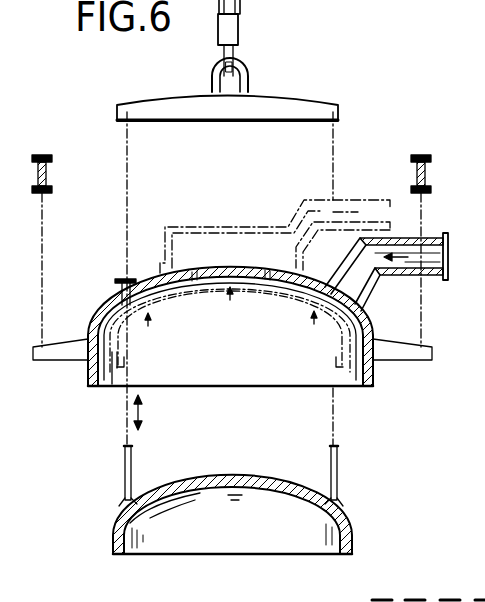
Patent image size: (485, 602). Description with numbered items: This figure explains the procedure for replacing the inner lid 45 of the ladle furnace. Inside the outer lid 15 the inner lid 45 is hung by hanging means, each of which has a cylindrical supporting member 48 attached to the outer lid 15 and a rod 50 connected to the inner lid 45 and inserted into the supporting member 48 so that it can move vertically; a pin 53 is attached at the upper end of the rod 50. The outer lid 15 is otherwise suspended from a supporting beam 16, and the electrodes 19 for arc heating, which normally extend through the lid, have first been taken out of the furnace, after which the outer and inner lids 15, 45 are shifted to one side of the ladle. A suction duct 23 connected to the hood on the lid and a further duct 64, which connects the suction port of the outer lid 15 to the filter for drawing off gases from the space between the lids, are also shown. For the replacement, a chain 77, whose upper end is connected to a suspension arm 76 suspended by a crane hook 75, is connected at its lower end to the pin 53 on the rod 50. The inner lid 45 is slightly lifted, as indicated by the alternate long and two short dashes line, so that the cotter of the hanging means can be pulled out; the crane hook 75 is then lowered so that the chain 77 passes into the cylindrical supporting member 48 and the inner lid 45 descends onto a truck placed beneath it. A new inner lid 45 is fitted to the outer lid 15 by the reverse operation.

The outer lid 15 is at (100, 308).
The supporting beam 16 is at (52, 170).
The electrodes 19 is at (362, 601).
The duct 23 is at (353, 197).
The inner lid 45 is at (113, 530).
The cylindrical supporting member 48 is at (118, 292).
The rod 50 is at (124, 470).
The pin 53 is at (126, 445).
The duct 64 is at (406, 276).
The crane hook 75 is at (237, 56).
The suspension arm 76 is at (178, 98).
The chain 77 is at (127, 143).